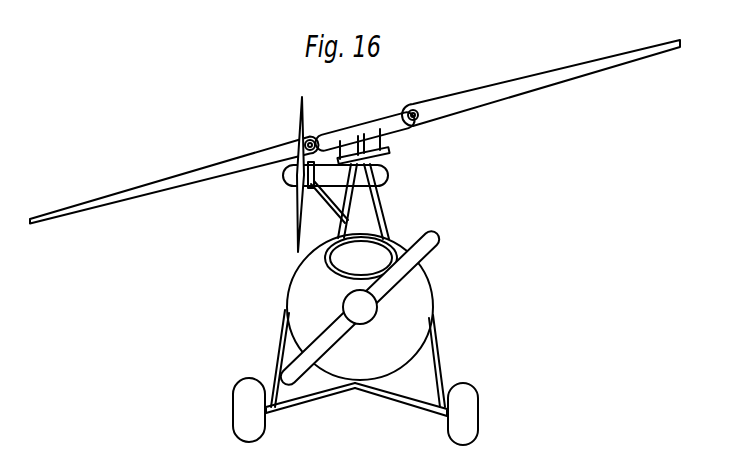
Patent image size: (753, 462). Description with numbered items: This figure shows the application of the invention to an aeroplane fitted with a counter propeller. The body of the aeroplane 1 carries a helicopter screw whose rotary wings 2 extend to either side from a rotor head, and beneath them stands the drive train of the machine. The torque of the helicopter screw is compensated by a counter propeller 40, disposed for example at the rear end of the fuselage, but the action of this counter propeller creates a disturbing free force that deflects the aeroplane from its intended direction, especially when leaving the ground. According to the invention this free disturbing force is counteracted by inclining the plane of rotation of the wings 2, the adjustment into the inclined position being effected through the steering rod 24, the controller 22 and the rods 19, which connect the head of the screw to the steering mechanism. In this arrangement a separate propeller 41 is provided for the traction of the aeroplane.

The fuselage / body 1 is at (433, 305).
The wings 2 is at (208, 171).
The rods 19 is at (388, 141).
The controller 22 is at (389, 159).
The steering rod 24 is at (380, 204).
The counter propeller 40 is at (297, 200).
The propeller 41 is at (435, 242).